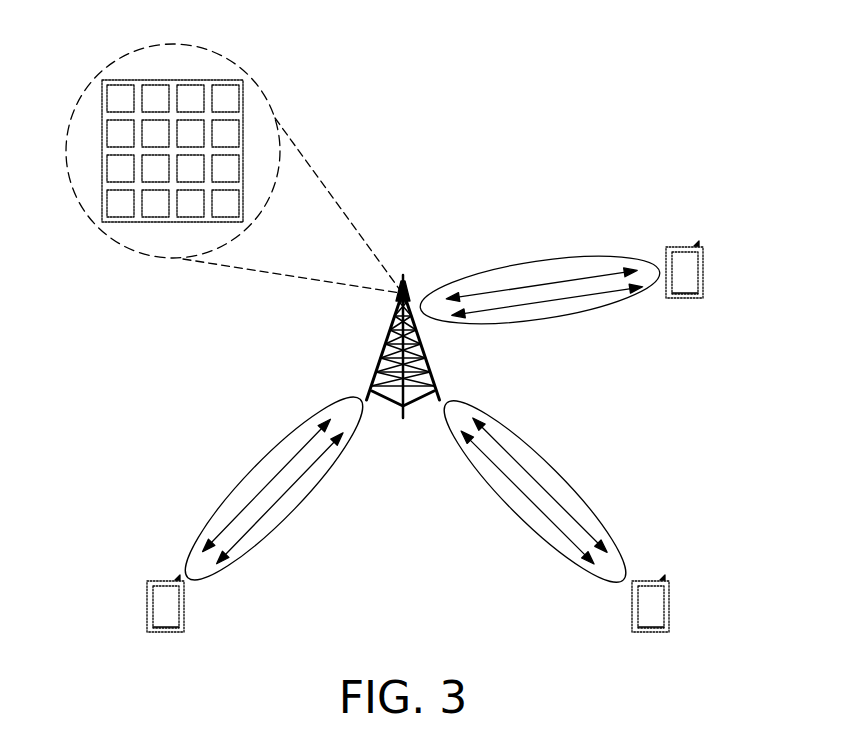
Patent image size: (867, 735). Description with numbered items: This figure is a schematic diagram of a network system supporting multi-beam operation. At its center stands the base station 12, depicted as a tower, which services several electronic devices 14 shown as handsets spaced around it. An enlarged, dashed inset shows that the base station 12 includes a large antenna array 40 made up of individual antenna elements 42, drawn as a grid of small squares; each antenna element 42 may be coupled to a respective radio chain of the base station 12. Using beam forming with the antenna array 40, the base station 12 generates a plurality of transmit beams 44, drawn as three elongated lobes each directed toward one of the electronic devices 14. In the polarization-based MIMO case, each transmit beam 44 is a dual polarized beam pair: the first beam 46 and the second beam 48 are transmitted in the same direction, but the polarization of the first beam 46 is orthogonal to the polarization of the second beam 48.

The base station 12 is at (423, 251).
The electronic devices 14 is at (714, 237).
The antenna array 40 is at (198, 70).
The antenna elements 42 is at (107, 91).
The transmit beams 44 is at (565, 322).
The first beam 46 is at (608, 276).
The second beam 48 is at (597, 294).